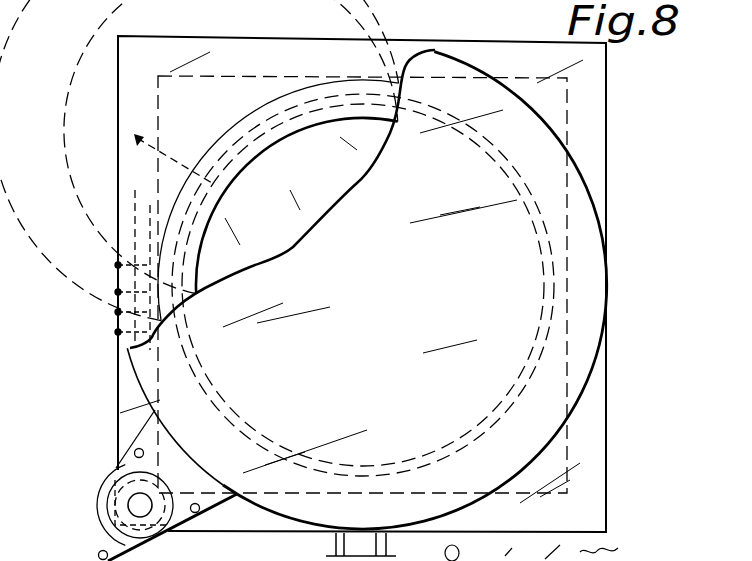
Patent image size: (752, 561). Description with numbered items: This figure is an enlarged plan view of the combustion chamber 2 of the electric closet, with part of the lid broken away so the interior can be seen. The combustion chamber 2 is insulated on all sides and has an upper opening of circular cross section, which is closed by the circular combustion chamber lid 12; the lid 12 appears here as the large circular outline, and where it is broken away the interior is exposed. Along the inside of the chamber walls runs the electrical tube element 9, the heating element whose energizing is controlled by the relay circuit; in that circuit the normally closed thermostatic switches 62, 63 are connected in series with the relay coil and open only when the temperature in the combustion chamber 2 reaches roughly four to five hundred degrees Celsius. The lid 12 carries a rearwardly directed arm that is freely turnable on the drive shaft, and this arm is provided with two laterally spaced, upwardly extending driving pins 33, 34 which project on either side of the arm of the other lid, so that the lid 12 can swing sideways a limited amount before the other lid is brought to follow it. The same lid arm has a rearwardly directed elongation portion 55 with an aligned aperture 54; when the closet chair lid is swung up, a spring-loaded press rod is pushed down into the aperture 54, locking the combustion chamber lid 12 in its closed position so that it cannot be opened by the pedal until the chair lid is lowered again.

The combustion chamber 2 is at (357, 127).
The electrical tube element 9 is at (316, 98).
The combustion chamber lid 12 is at (588, 277).
The driving pin 33 is at (135, 449).
The driving pin 34 is at (199, 512).
The aperture 54 is at (99, 552).
The elongation portion 55 is at (101, 524).
The thermostatic switch 62 is at (116, 266).
The thermostatic switch 63 is at (116, 322).